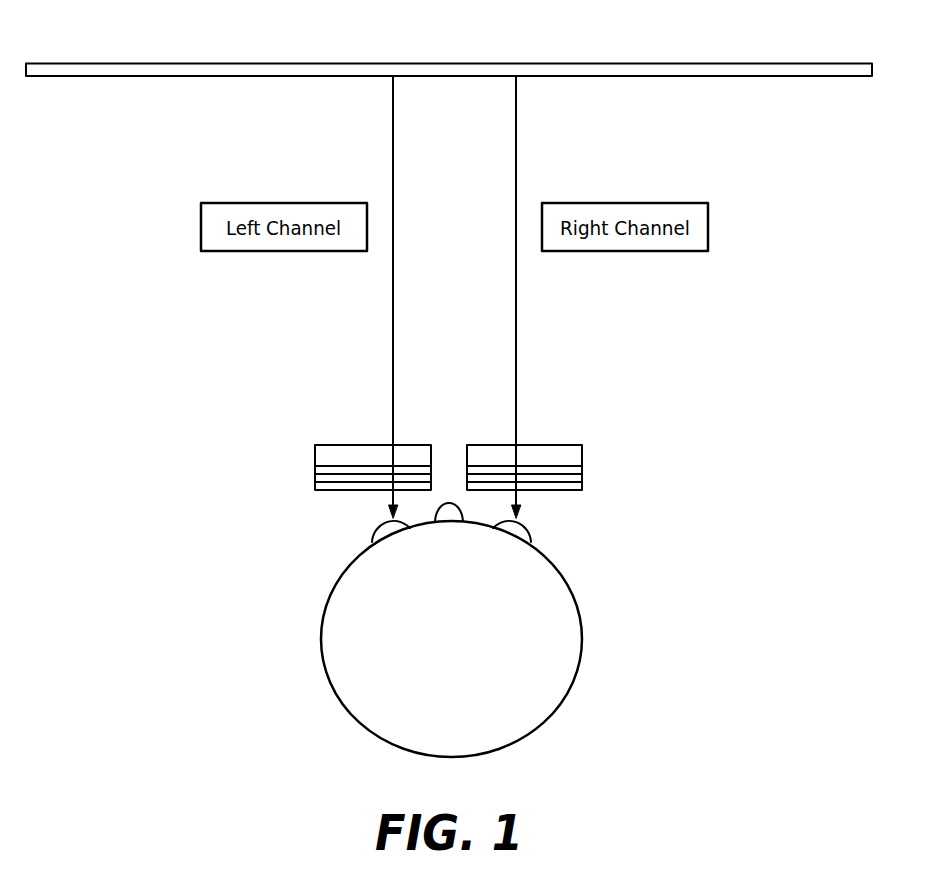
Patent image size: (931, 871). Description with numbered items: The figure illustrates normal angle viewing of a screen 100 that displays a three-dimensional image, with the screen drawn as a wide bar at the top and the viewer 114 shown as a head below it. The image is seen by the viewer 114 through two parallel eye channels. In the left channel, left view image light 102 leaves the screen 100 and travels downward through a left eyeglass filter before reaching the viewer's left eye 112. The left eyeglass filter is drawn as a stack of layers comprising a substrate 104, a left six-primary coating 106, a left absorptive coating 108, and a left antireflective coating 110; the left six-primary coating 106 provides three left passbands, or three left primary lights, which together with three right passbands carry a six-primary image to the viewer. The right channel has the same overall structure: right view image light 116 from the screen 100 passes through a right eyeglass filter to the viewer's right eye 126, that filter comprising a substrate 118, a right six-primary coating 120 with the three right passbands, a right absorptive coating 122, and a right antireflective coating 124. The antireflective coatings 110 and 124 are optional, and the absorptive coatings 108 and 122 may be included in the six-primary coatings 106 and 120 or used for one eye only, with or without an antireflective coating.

The screen 100 is at (192, 63).
The left view image light 102 is at (393, 131).
The substrate 104 is at (315, 455).
The left 6P coating 106 is at (315, 470).
The left absorptive coating 108 is at (315, 478).
The left antireflective coating 110 is at (315, 487).
The left eye 112 is at (372, 535).
The viewer 114 is at (583, 645).
The right view image light 116 is at (516, 131).
The substrate 118 is at (582, 455).
The right 6P coating 120 is at (582, 470).
The right absorptive coating 122 is at (582, 478).
The right antireflective coating 124 is at (582, 487).
The right eye 126 is at (531, 535).